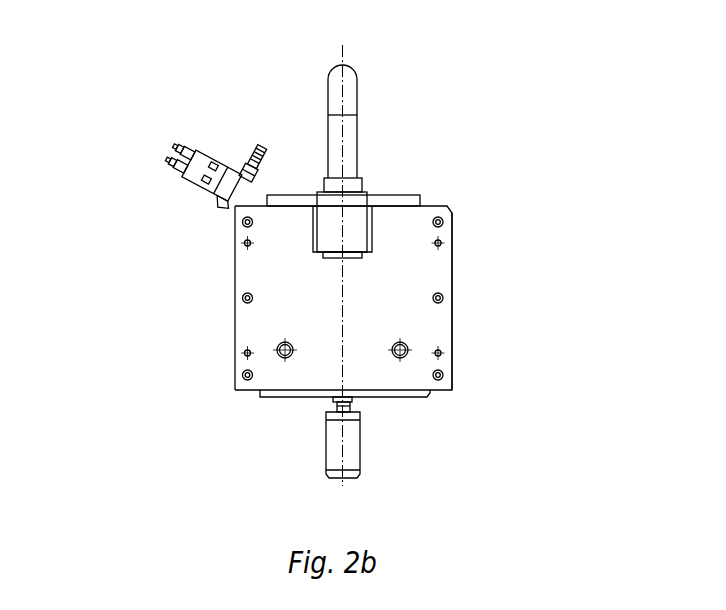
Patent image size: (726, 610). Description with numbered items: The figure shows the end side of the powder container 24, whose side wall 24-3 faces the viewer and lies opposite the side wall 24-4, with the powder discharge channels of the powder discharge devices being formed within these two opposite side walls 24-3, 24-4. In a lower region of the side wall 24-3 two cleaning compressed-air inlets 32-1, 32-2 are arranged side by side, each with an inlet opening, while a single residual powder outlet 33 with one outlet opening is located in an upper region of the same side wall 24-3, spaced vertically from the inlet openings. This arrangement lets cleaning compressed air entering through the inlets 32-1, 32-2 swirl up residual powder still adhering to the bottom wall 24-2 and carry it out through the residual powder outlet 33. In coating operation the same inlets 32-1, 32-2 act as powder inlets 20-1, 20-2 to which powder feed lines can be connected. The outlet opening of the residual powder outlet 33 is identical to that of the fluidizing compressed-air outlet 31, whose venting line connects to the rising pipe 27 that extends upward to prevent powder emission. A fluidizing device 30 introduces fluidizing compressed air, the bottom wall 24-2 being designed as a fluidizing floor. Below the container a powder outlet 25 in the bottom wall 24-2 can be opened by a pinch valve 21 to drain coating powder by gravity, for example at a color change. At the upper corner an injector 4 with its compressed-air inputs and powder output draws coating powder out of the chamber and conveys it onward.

The injector 4 is at (196, 150).
The pinch valve 21 is at (321, 459).
The powder container 24 is at (507, 75).
The bottom wall 24-2 is at (191, 298).
The side wall 24-3 is at (395, 277).
The side wall 24-4 is at (498, 301).
The powder outlet 25 is at (389, 452).
The rising pipe 27 is at (327, 115).
The fluidizing device 30 is at (366, 421).
The fluidizing compressed-air outlet 31 is at (384, 186).
The residual powder outlet 33 is at (384, 186).
The powder inlet 20-1 is at (494, 333).
The powder inlet 20-2 is at (192, 333).
The cleaning compressed-air inlet 32-1 is at (494, 333).
The cleaning compressed-air inlet 32-2 is at (192, 333).